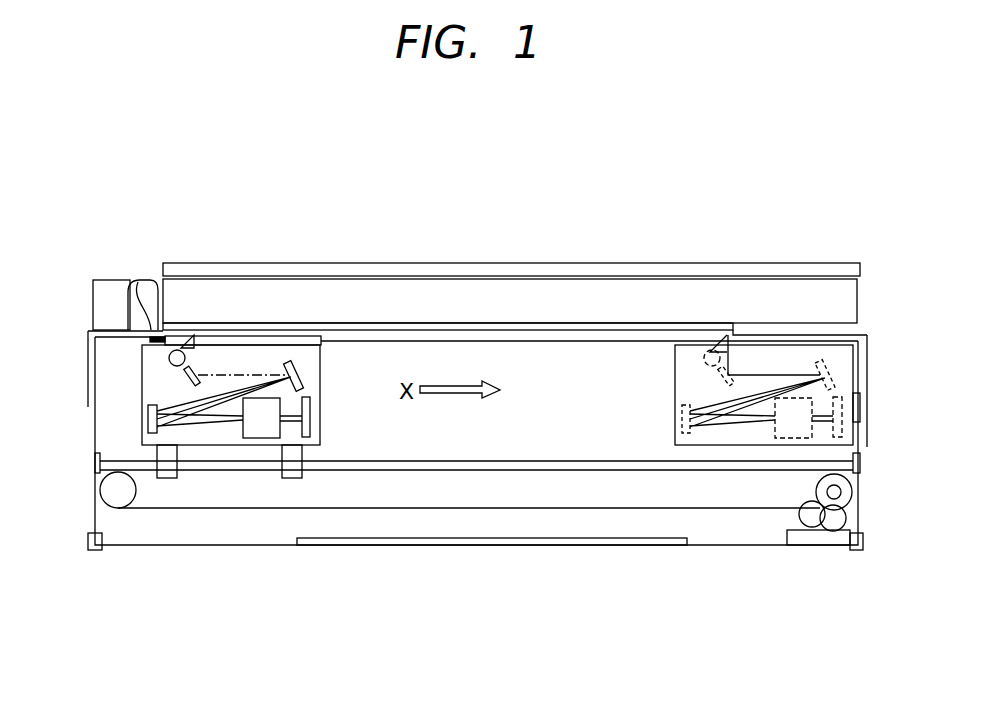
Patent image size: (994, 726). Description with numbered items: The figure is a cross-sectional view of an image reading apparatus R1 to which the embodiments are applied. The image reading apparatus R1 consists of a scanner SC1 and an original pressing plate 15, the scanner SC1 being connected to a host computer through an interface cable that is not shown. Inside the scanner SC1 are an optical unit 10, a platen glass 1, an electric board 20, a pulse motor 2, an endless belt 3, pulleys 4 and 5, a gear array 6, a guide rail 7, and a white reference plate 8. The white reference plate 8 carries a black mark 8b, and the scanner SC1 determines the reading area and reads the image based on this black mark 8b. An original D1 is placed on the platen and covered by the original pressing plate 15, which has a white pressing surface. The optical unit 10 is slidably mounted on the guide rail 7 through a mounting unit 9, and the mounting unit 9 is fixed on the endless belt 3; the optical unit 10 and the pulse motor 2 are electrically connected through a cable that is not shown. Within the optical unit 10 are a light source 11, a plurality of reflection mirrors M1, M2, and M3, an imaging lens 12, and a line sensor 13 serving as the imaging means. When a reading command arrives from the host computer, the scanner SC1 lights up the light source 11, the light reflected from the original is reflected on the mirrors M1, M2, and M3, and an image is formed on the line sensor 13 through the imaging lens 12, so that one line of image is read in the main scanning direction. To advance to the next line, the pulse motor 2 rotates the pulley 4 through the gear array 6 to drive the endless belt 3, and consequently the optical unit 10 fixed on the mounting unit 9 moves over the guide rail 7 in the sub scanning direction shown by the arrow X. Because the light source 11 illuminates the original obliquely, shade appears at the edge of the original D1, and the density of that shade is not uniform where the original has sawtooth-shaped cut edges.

The platen glass 1 is at (523, 333).
The pulse motor 2 is at (818, 540).
The endless belt 3 is at (208, 510).
The pulley 4 is at (855, 514).
The pulley 5 is at (100, 487).
The gear array 6 is at (807, 518).
The guide rail 7 is at (597, 471).
The white reference plate 8 is at (93, 333).
The black mark 8b is at (138, 282).
The mounting unit 9 is at (165, 479).
The optical unit 10 is at (213, 355).
The light source 11 is at (168, 362).
The imaging lens 12 is at (258, 440).
The line sensor 13 is at (306, 396).
The original pressing plate 15 is at (422, 295).
The electric board 20 is at (486, 541).
The reflection mirror M1 is at (188, 380).
The reflection mirror M2 is at (292, 362).
The reflection mirror M3 is at (147, 414).
The original D1 is at (352, 327).
The image reading apparatus R1 is at (559, 142).
The scanner SC1 is at (118, 548).